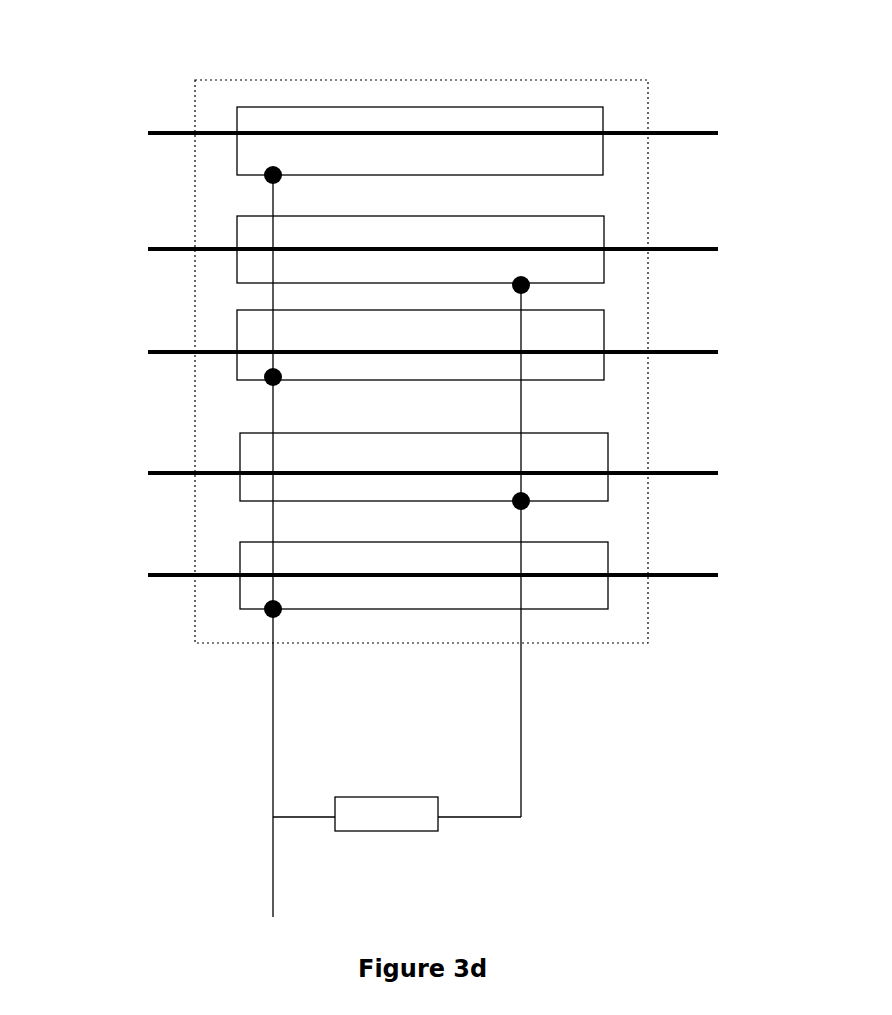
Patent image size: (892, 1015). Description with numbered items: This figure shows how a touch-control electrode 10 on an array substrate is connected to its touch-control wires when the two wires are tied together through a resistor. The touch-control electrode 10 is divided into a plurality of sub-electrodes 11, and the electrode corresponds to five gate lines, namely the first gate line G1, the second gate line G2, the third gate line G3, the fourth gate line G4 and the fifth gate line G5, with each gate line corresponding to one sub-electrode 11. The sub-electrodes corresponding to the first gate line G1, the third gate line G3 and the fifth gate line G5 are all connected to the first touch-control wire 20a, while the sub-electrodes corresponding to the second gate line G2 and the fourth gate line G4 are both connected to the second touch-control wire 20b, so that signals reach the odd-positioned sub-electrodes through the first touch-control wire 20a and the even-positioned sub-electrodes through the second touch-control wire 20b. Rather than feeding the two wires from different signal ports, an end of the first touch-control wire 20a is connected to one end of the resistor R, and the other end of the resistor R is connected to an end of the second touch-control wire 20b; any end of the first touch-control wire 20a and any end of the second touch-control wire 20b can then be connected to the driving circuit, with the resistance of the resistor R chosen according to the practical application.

The touch-control electrode 10 is at (342, 80).
The sub-electrode 11 is at (525, 107).
The first touch-control wire 20a is at (275, 697).
The second touch-control wire 20b is at (526, 672).
The resistor R is at (397, 800).
The first gate line G1 is at (103, 133).
The second gate line G2 is at (103, 249).
The third gate line G3 is at (103, 352).
The fourth gate line G4 is at (103, 473).
The fifth gate line G5 is at (103, 575).